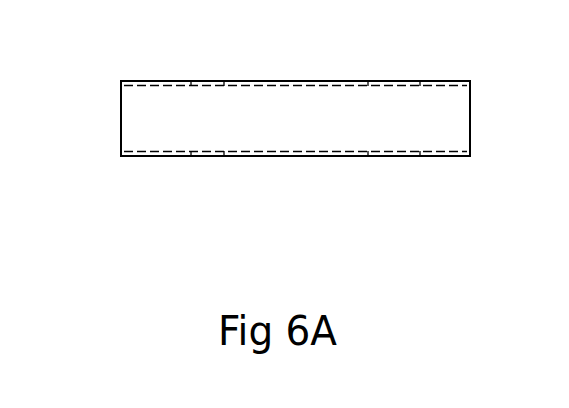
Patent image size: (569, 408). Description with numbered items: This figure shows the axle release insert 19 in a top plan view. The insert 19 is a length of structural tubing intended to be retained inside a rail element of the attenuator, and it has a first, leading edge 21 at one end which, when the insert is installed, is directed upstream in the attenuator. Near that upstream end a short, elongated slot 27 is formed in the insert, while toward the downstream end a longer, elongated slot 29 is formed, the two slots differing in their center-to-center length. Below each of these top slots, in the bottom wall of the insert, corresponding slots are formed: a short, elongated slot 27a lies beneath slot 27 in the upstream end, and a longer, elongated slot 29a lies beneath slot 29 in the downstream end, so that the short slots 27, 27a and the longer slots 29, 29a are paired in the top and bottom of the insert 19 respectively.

The axle release insert 19 is at (492, 101).
The leading edge 21 is at (116, 121).
The short elongated slot 27 is at (207, 78).
The longer elongated slot 29 is at (381, 79).
The short elongated slot 27a is at (209, 160).
The longer elongated slot 29a is at (378, 161).